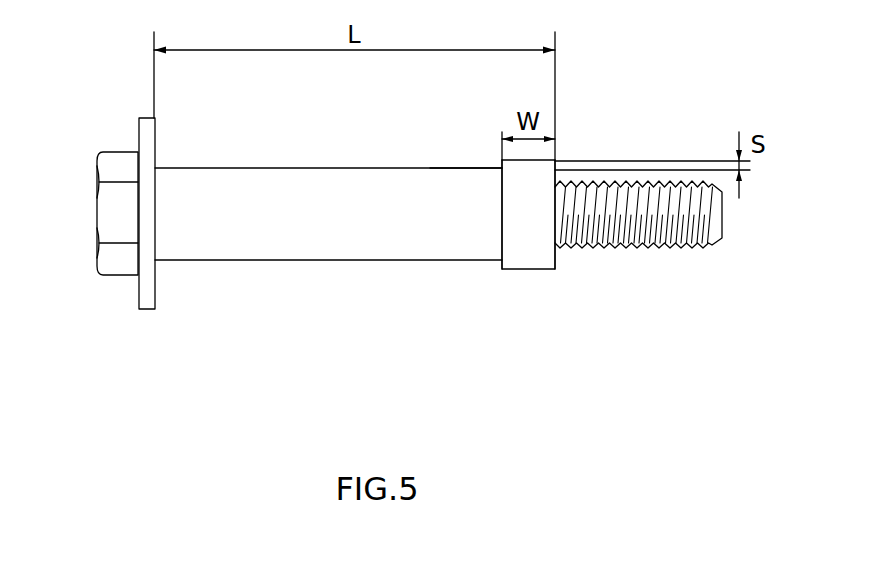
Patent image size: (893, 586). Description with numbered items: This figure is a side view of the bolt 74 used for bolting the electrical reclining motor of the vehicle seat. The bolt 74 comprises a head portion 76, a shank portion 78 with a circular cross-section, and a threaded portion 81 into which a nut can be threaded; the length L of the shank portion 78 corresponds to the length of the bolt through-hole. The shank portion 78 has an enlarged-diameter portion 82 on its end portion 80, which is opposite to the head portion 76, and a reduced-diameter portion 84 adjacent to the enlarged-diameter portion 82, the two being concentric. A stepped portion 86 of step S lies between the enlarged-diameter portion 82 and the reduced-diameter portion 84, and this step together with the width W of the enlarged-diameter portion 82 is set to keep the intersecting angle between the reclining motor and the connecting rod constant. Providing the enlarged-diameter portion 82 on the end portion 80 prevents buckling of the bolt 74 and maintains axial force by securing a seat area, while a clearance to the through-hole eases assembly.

The bolt 74 is at (445, 290).
The head portion 76 is at (120, 157).
The shank portion 78 is at (442, 163).
The end portion 80 is at (522, 278).
The threaded portion 81 is at (643, 249).
The enlarged-diameter portion 82 is at (538, 273).
The reduced-diameter portion 84 is at (293, 167).
The stepped portion 86 is at (500, 264).